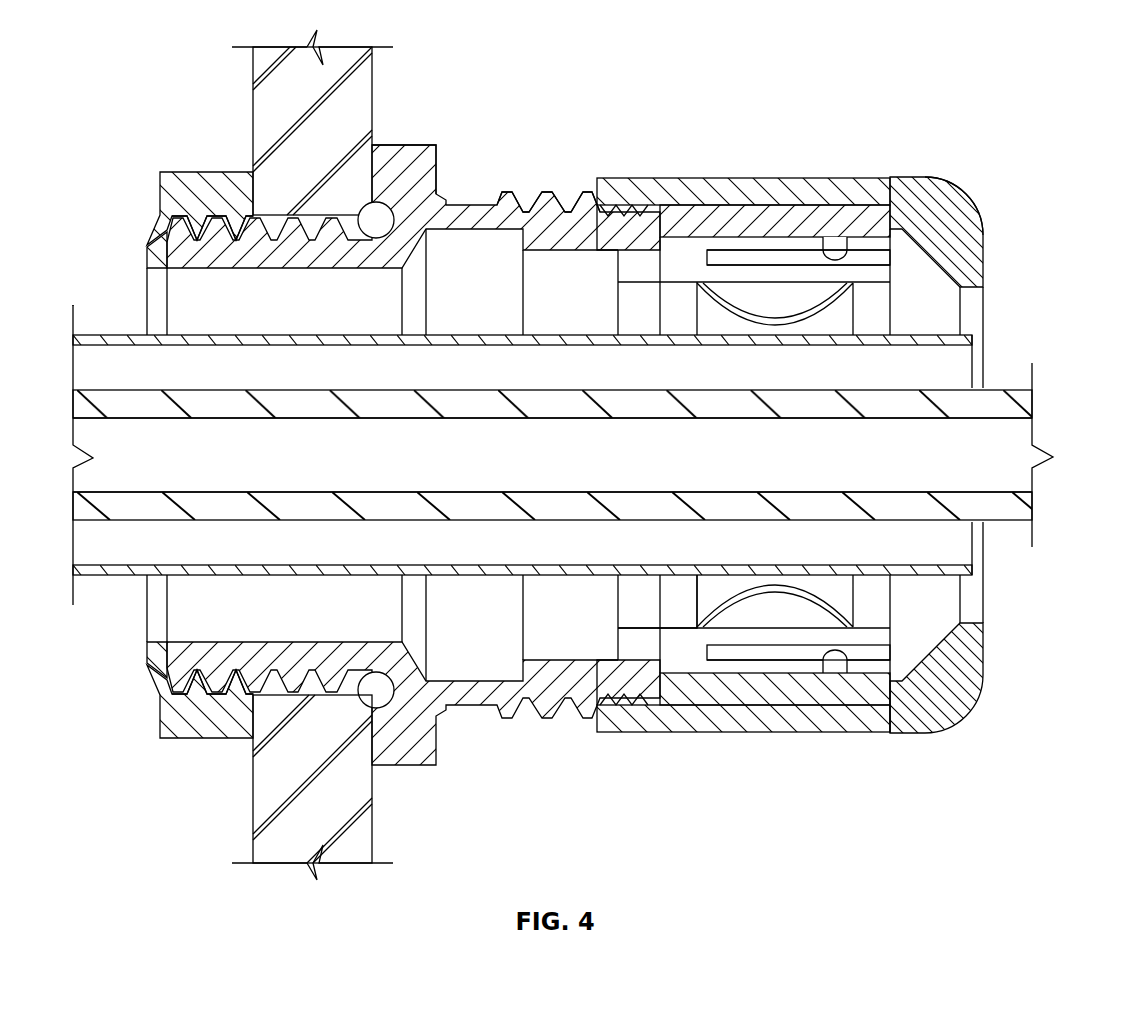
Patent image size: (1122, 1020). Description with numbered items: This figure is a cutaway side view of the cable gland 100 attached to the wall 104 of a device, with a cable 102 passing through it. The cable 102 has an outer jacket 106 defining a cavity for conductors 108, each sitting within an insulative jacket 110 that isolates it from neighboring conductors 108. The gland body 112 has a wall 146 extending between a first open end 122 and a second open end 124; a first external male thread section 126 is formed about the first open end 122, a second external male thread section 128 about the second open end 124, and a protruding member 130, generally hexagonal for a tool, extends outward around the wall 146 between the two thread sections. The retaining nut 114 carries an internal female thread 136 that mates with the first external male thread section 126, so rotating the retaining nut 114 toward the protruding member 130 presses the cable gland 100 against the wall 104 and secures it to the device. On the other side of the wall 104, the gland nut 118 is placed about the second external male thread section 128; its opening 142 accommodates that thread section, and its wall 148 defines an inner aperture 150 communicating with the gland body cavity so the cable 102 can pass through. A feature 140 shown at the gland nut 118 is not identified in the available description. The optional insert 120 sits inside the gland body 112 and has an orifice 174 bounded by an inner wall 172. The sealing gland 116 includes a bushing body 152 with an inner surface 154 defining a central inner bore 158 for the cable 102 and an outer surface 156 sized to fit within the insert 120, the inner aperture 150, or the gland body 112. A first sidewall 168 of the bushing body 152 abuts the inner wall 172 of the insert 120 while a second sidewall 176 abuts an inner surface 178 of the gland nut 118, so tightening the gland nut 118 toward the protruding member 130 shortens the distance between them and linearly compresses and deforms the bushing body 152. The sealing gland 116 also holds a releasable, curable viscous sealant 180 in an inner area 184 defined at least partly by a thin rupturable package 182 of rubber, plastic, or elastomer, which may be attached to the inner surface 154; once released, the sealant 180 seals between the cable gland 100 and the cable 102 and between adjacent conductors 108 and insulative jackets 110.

The cable gland 100 is at (757, 52).
The cable 102 is at (115, 335).
The wall 104 is at (290, 90).
The outer jacket 106 is at (115, 576).
The conductors 108 is at (980, 445).
The insulative jacket 110 is at (1000, 393).
The gland body 112 is at (447, 170).
The retaining nut 114 is at (182, 187).
The sealing gland 116 is at (893, 265).
The gland nut 118 is at (960, 250).
The insert 120 is at (775, 303).
The first open end 122 is at (150, 247).
The second open end 124 is at (622, 270).
The first external male thread section 126 is at (197, 672).
The second external male thread section 128 is at (523, 700).
The protruding member 130 is at (428, 148).
The internal female thread 136 is at (197, 232).
The coupling nut 140 is at (777, 660).
The opening 142 is at (157, 628).
The wall 146 is at (475, 212).
The wall 148 is at (867, 710).
The inner aperture 150 is at (930, 595).
The bushing body 152 is at (700, 245).
The inner surface 154 is at (697, 630).
The outer surface 156 is at (748, 700).
The inner bore 158 is at (660, 600).
The first sidewall 168 is at (660, 317).
The inner wall 172 is at (693, 260).
The orifice 174 is at (867, 262).
The second sidewall 176 is at (893, 258).
The inner surface 178 is at (900, 228).
The sealant 180 is at (820, 290).
The package 182 is at (823, 318).
The inner area 184 is at (830, 257).